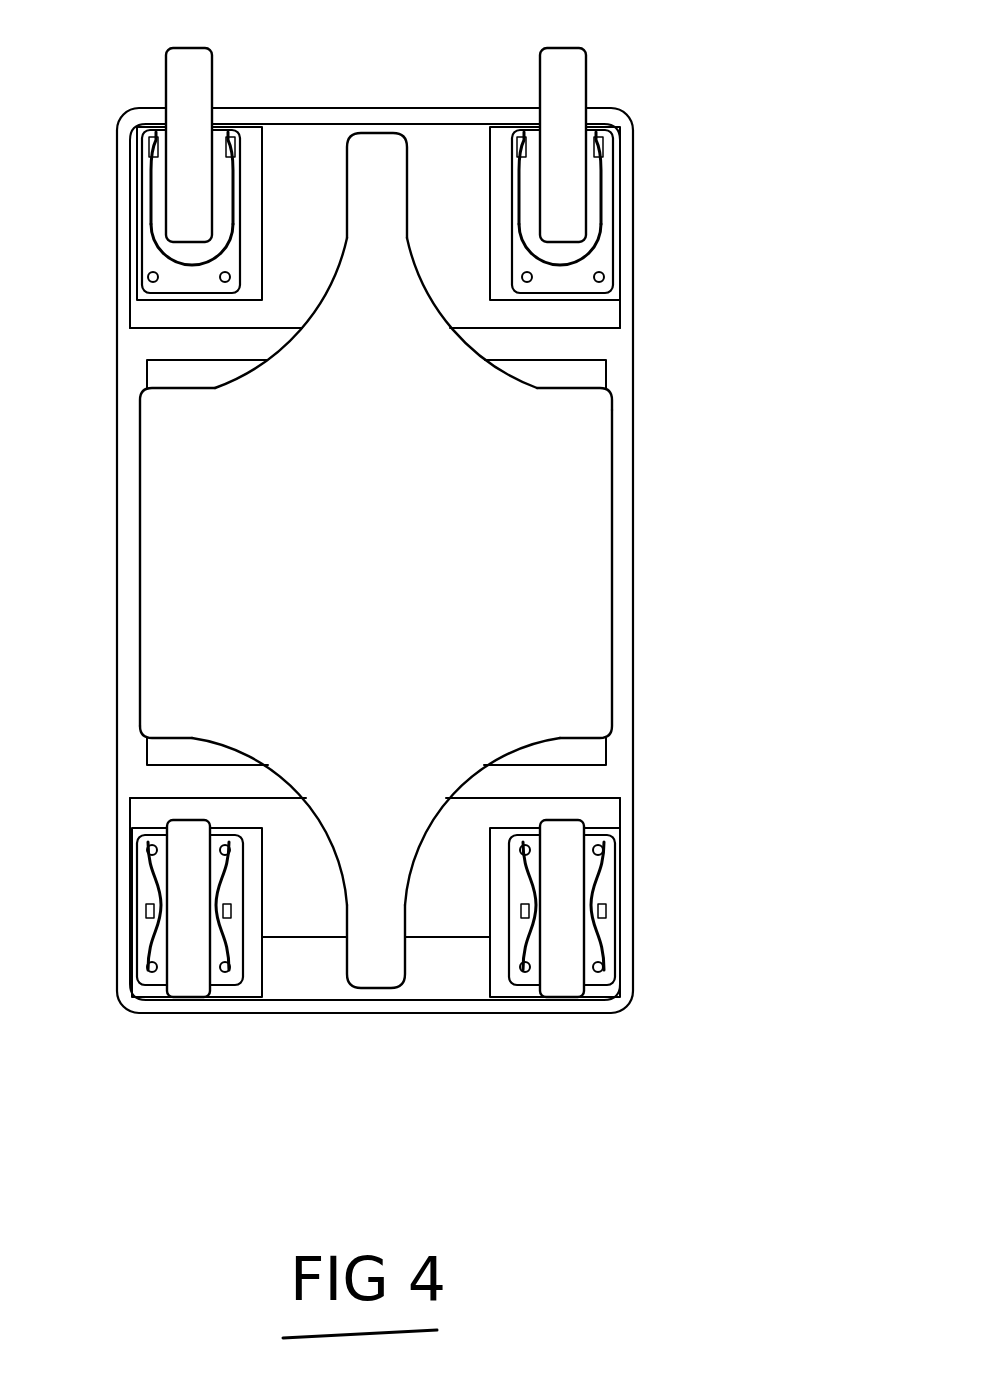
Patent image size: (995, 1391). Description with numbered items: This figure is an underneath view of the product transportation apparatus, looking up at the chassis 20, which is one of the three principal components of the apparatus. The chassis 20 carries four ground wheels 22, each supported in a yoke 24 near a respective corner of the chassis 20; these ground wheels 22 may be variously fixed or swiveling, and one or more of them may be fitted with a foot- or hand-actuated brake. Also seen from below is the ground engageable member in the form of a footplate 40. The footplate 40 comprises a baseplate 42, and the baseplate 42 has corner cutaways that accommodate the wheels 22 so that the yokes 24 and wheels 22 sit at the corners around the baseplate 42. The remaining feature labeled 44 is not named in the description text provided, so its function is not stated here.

The chassis 20 is at (637, 703).
The ground wheels 22 is at (565, 87).
The yokes 24 is at (600, 192).
The footplate 40 is at (533, 500).
The baseplate 42 is at (573, 563).
The curved corner transition 44 is at (568, 390).